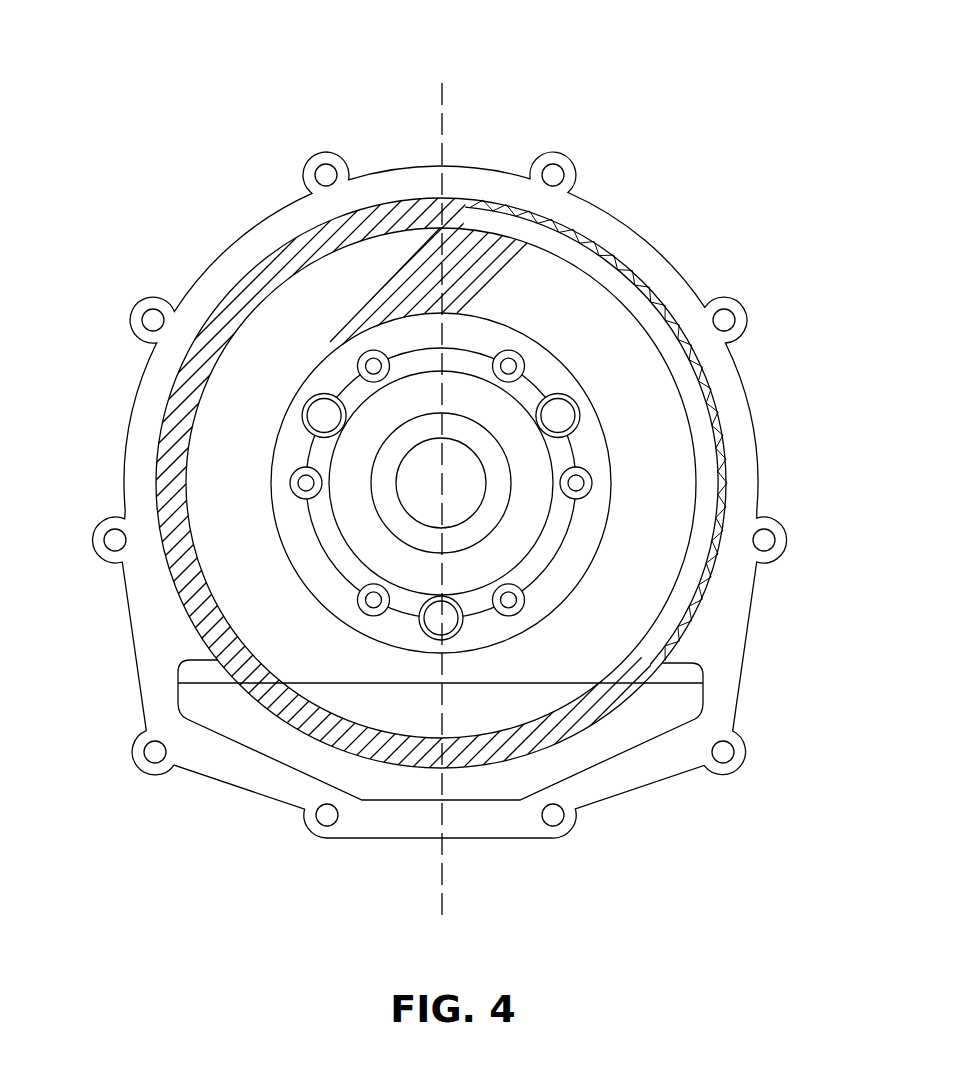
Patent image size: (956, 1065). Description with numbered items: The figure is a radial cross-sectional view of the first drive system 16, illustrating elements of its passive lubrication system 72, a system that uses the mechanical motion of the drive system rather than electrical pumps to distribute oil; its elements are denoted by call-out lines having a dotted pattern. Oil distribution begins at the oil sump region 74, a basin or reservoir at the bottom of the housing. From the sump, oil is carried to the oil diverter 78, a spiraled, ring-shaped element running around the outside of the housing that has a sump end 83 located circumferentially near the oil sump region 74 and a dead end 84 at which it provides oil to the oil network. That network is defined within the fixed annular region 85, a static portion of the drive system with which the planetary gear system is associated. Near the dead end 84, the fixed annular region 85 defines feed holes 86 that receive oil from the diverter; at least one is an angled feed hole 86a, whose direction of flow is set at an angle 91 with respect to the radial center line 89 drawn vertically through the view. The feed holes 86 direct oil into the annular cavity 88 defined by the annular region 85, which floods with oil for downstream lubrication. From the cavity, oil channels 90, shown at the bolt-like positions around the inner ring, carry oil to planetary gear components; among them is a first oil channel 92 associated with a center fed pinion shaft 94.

The first drive system 16 is at (419, 468).
The lubrication system 72 is at (704, 261).
The oil sump region 74 is at (430, 773).
The oil diverter 78 is at (596, 270).
The sump end 83 is at (652, 666).
The dead end 84 is at (508, 232).
The fixed annular region 85 is at (239, 386).
The feed holes 86 is at (412, 258).
The angled feed hole 86a is at (437, 198).
The annular cavity 88 is at (572, 571).
The radial center line 89 is at (443, 110).
The oil channels 90 is at (318, 414).
The angle 91 is at (437, 296).
The first oil channel 92 is at (471, 661).
The center fed pinion shaft 94 is at (441, 628).